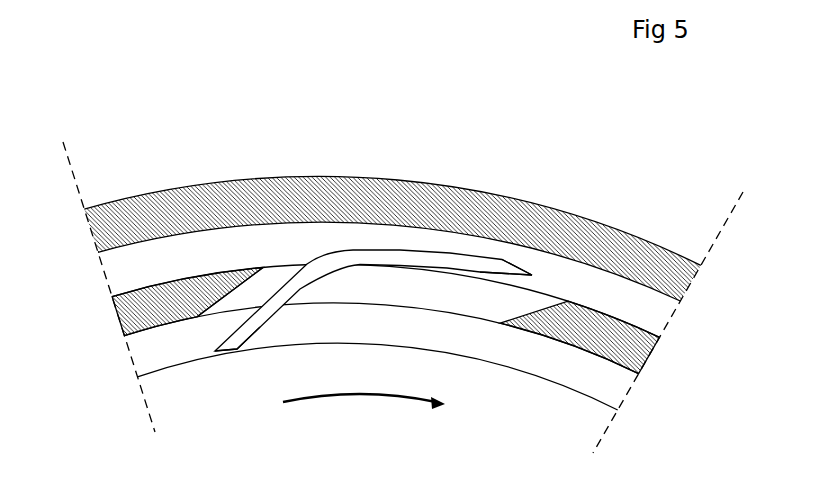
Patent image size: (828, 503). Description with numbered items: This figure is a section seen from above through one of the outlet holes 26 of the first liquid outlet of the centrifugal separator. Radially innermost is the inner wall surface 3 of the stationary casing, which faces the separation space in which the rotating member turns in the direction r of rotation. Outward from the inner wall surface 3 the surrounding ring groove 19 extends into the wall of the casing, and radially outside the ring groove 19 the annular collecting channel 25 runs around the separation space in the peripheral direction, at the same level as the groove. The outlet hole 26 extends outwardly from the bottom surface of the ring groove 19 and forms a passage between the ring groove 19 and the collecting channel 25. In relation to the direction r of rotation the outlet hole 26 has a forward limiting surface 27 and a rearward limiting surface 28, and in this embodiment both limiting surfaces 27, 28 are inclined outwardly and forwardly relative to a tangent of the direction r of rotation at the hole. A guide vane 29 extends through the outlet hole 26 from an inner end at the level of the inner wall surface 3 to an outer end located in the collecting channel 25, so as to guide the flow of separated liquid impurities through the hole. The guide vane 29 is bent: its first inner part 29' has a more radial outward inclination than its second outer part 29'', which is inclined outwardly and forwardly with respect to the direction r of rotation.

The inner wall surface 3 is at (570, 388).
The ring groove 19 is at (158, 328).
The annular collecting channel 25 is at (163, 260).
The outlet hole 26 is at (287, 272).
The forward limiting surface 27 is at (542, 307).
The rearward limiting surface 28 is at (205, 310).
The guide vane 29 is at (373, 233).
The first inner part 29' is at (260, 394).
The second outer part 29'' is at (485, 361).
The direction of rotation r is at (388, 404).